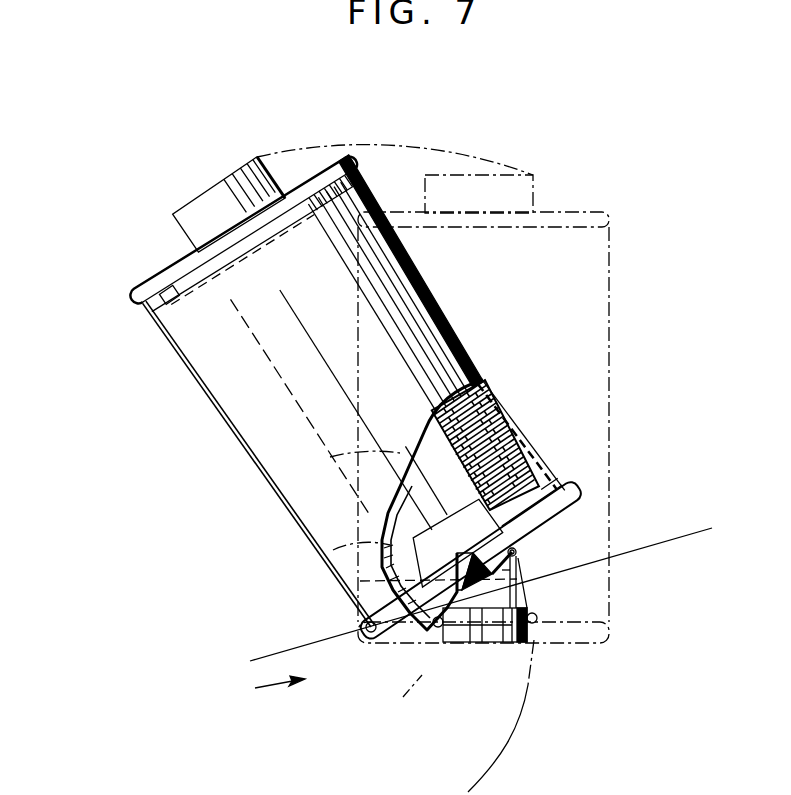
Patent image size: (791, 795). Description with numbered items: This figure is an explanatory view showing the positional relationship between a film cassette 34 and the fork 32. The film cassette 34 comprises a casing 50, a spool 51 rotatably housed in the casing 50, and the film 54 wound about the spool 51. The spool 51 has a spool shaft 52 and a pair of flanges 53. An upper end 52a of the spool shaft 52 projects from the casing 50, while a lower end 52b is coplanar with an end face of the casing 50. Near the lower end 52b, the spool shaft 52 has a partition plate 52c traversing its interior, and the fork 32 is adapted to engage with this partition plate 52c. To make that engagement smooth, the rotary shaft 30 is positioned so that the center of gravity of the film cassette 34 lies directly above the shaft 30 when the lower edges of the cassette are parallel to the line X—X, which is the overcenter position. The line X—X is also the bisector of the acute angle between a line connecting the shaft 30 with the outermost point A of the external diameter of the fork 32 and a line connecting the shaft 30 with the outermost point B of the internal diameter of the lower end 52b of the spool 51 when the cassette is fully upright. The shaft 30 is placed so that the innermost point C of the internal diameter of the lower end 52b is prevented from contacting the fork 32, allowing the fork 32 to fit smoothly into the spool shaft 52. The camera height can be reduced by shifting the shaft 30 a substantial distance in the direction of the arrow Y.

The rotary shaft 30 is at (362, 622).
The fork 32 is at (505, 568).
The film cassette 34 is at (228, 451).
The casing 50 is at (535, 445).
The spool 51 is at (195, 178).
The spool shaft 52 is at (490, 378).
The upper end of the spool shaft 52a is at (190, 220).
The lower end of the spool shaft 52b is at (382, 524).
The partition plate 52c is at (360, 493).
The flanges 53 is at (180, 315).
The film 54 is at (512, 398).
The outermost point of the external diameter of the fork A is at (516, 548).
The outermost point of the internal diameter of the lower end of the spool B is at (534, 623).
The innermost point of the internal diameter of the lower end C is at (437, 627).
The line X— X is at (483, 595).
The arrow Y is at (267, 695).